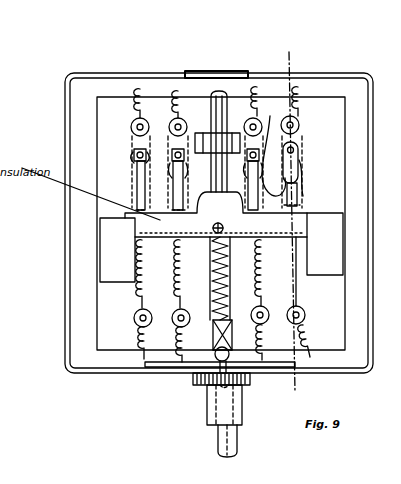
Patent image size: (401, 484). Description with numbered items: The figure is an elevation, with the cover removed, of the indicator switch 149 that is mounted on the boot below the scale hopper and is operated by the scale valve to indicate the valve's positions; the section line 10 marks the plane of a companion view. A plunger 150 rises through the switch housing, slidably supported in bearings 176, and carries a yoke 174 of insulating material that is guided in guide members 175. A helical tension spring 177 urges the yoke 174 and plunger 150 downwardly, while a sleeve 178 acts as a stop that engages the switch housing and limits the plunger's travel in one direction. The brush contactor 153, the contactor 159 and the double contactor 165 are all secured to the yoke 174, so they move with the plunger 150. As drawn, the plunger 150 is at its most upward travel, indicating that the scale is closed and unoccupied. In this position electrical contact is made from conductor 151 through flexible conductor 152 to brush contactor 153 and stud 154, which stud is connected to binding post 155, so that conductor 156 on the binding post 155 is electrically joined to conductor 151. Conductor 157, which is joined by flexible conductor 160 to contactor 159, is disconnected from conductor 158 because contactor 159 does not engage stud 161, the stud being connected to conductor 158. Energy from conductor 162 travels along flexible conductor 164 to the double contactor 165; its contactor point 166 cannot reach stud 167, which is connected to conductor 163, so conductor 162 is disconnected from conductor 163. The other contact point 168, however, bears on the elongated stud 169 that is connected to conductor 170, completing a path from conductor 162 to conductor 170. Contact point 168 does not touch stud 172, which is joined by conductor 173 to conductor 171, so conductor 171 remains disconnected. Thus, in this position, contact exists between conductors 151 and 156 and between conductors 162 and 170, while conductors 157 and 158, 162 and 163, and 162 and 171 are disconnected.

The switch 149 is at (209, 61).
The section line 10 is at (289, 52).
The plunger 150 is at (221, 450).
The conductor 151 is at (139, 340).
The flexible conductor 152 is at (138, 306).
The brush contactor 153 is at (140, 193).
The stud 154 is at (133, 156).
The binding post 155 is at (131, 125).
The conductor 156 is at (136, 92).
The conductor 157 is at (181, 357).
The conductor 158 is at (174, 101).
The contactor 159 is at (178, 210).
The flexible conductor 160 is at (177, 281).
The stud 161 is at (172, 171).
The conductor 162 is at (259, 340).
The conductor 163 is at (250, 95).
The flexible conductor 164 is at (264, 279).
The double contactor 165 is at (288, 208).
The contactor point 166 is at (263, 156).
The stud 167 is at (284, 185).
The contact point 168 is at (300, 150).
The elongated stud 169 is at (300, 173).
The conductor 170 is at (303, 91).
The conductor 171 is at (311, 334).
The stud 172 is at (304, 189).
The conductor 173 is at (300, 296).
The yoke 174 is at (216, 214).
The guide members 175 is at (117, 253).
The bearings 176 is at (209, 410).
The helical tension spring 177 is at (228, 271).
The sleeve 178 is at (226, 297).